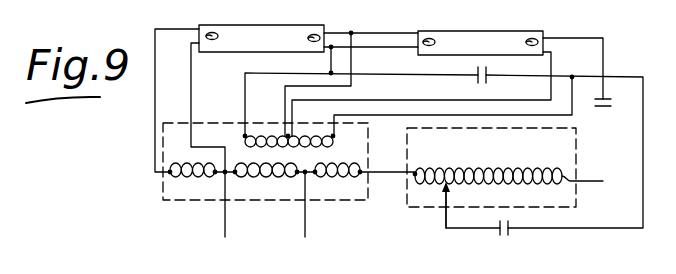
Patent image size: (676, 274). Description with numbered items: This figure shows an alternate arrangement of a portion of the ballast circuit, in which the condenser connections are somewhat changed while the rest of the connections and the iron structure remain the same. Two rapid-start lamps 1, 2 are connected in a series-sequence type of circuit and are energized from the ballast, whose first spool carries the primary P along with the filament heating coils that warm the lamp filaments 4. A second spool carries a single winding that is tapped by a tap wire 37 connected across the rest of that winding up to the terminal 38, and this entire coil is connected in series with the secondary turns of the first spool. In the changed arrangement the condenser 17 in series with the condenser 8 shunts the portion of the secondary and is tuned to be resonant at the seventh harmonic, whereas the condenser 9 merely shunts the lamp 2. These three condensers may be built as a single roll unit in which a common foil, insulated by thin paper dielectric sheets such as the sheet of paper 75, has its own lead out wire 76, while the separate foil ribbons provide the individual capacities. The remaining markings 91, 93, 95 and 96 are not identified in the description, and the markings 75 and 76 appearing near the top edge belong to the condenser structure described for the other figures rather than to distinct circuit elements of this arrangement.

The lamp 1 is at (262, 24).
The lamp 2 is at (485, 31).
The lamp filament electrode 4 is at (217, 32).
The condenser 8 is at (611, 104).
The condenser 9 is at (482, 83).
The condenser 17 is at (504, 238).
The tap wire 37 is at (444, 215).
The terminal 38 is at (565, 177).
The lead out wire 76 is at (606, 78).
The primary P is at (268, 178).
The sheet of paper 75 is at (666, 0).
The reference numeral (partially visible) 91 is at (357, 5).
The reference numeral (partially visible) 93 is at (592, 4).
The reference numeral (partially visible) 95 is at (357, 5).
The reference numeral (partially visible) 96 is at (480, 3).